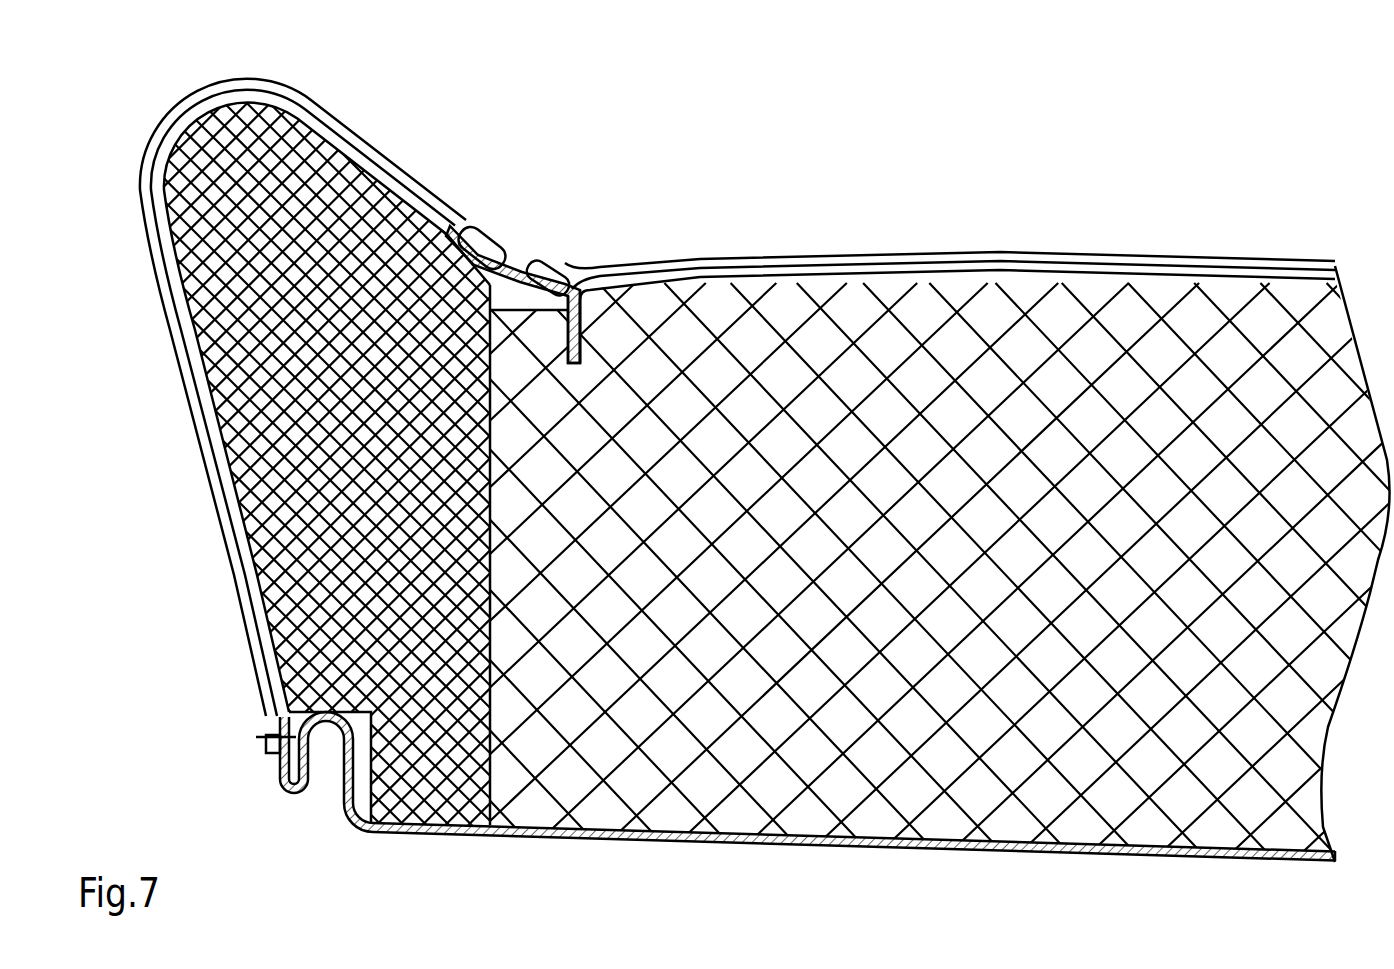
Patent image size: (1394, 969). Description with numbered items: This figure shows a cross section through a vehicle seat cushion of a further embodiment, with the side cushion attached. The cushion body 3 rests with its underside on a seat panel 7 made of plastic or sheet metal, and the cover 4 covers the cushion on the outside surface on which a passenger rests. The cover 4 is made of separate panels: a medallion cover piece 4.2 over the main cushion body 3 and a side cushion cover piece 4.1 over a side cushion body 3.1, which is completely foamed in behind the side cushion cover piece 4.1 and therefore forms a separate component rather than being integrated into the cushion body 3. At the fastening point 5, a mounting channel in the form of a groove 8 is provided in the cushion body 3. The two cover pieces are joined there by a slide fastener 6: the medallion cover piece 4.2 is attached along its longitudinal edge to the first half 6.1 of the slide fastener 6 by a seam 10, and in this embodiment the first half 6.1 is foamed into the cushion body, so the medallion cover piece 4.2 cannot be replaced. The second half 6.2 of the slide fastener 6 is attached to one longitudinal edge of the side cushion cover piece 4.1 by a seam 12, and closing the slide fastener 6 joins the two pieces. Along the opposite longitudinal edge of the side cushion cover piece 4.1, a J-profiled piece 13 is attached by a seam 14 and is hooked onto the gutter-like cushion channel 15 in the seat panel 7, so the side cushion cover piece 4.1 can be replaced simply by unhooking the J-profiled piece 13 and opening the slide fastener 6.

The cushion body 3 is at (1036, 509).
The side cushion body 3.1 is at (362, 446).
The cover 4 is at (762, 381).
The side cushion cover piece 4.1 is at (312, 112).
The medallion cover piece 4.2 is at (960, 252).
The fastening point 5 is at (560, 235).
The slide fastener 6 is at (527, 235).
The first half of the slide fastener 6.1 is at (552, 298).
The second half of the slide fastener 6.2 is at (510, 285).
The seat panel 7 is at (840, 838).
The groove 8 is at (517, 298).
The seam 10 is at (565, 262).
The seam 12 is at (489, 230).
The J-profiled piece 13 is at (283, 790).
The seam 14 is at (257, 738).
The cushion channel 15 is at (328, 745).